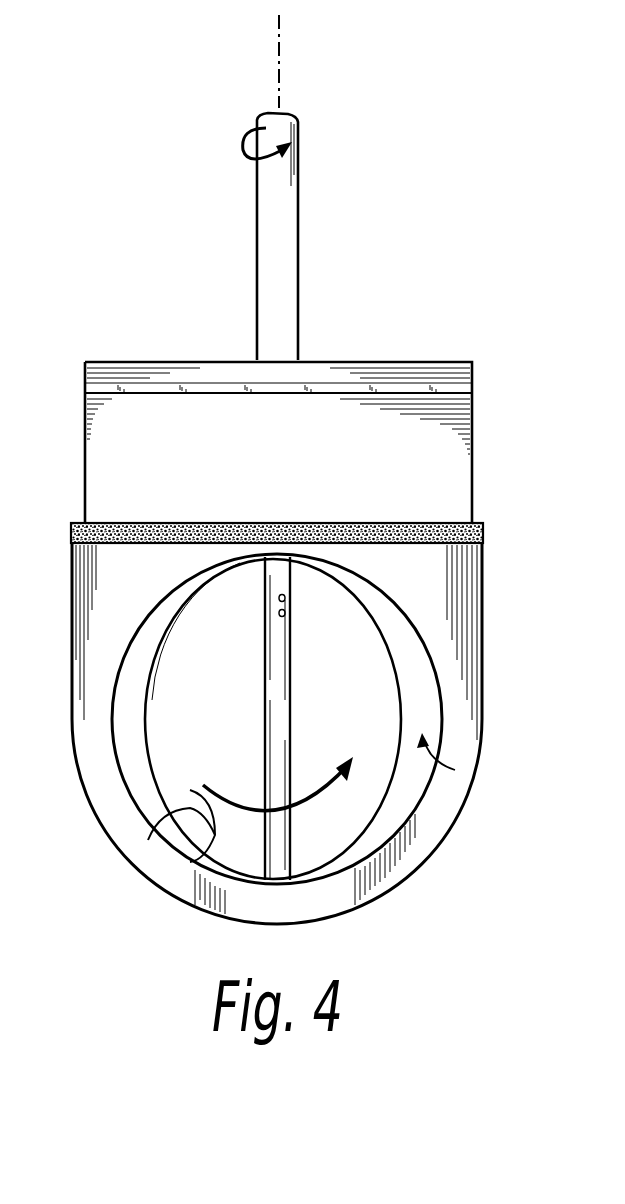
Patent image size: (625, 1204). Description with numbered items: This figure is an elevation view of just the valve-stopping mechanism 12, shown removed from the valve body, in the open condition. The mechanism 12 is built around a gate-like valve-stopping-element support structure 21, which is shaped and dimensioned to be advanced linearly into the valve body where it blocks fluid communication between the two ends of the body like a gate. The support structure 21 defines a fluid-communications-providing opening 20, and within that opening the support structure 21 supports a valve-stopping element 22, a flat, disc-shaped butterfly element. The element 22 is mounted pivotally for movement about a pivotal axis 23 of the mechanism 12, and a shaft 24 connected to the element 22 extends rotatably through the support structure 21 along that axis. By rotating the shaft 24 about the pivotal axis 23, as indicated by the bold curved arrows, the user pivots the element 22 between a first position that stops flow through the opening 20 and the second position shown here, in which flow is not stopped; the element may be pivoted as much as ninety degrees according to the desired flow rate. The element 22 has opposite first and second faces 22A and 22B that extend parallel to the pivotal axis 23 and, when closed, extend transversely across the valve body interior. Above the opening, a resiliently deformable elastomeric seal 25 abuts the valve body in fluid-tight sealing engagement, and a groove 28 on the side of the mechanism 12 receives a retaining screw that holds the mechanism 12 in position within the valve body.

The valve-stopping mechanism 12 is at (258, 113).
The fluid-communications-providing opening 20 is at (430, 765).
The valve-stopping-element support structure 21 is at (432, 568).
The valve-stopping element 22 is at (365, 663).
The first face 22A is at (198, 868).
The second face 22B is at (142, 822).
The pivotal axis 23 is at (281, 25).
The shaft 24 is at (300, 126).
The resiliently deformable elastomeric seal 25 is at (425, 526).
The groove 28 is at (478, 387).